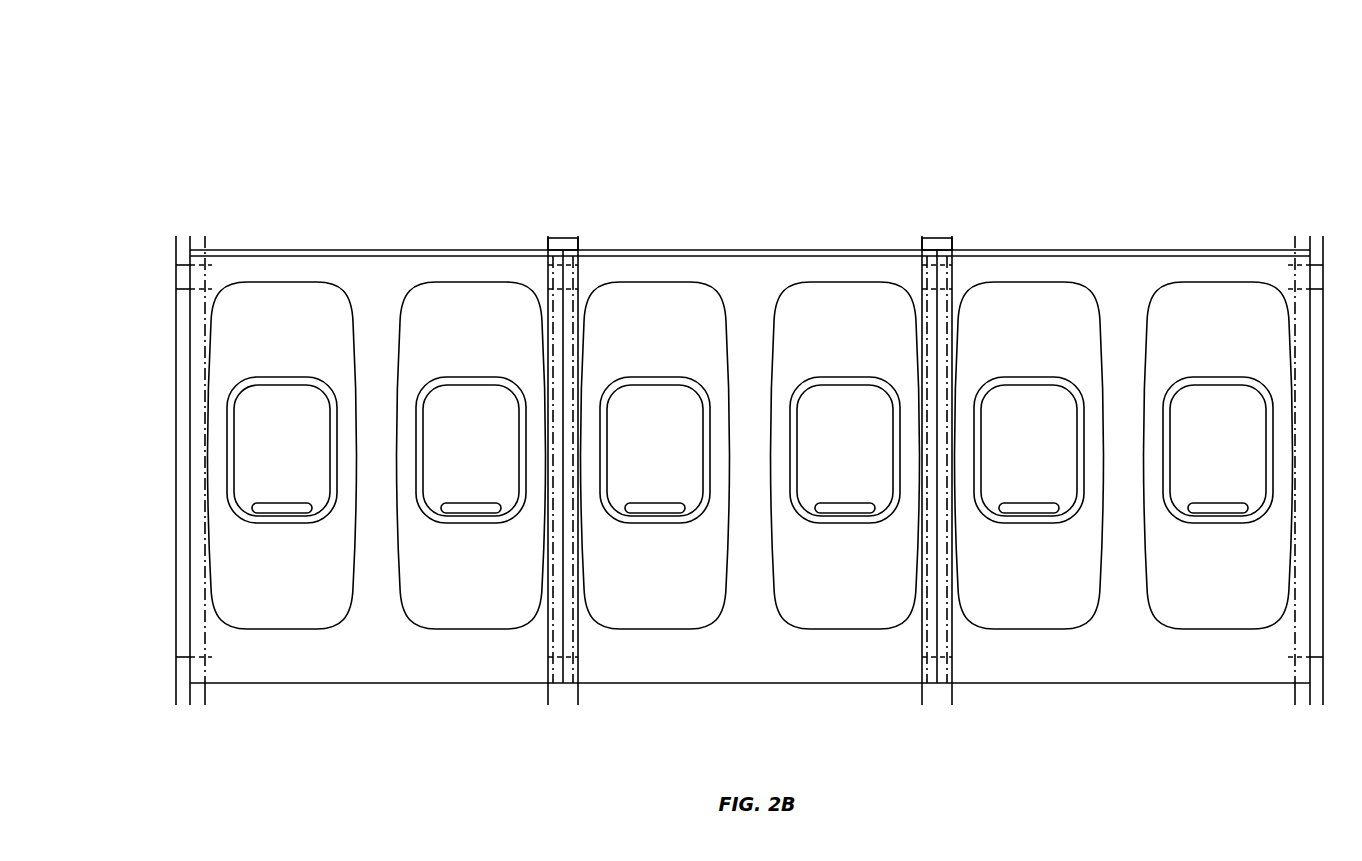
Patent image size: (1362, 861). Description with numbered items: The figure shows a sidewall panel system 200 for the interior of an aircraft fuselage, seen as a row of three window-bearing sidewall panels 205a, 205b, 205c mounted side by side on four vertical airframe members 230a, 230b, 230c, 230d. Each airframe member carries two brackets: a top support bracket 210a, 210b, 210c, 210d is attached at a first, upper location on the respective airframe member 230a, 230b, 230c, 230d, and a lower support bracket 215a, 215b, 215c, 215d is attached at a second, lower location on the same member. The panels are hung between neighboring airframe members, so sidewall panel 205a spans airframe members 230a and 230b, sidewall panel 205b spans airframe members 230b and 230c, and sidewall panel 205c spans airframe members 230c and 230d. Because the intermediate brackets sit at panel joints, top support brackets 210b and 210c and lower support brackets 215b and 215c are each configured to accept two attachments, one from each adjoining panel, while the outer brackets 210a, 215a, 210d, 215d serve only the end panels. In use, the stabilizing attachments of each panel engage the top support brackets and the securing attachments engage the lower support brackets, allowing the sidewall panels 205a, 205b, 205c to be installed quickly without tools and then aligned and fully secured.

The sidewall panel system 200 is at (1064, 142).
The sidewall panel 205a is at (377, 285).
The sidewall panel 205b is at (757, 288).
The sidewall panel 205c is at (1127, 280).
The top support bracket 210a is at (183, 275).
The top support bracket 210b is at (553, 238).
The top support bracket 210c is at (932, 238).
The top support bracket 210d is at (1318, 263).
The lower support bracket 215a is at (183, 669).
The lower support bracket 215b is at (555, 672).
The lower support bracket 215c is at (928, 672).
The lower support bracket 215d is at (1300, 672).
The airframe member 230a is at (190, 697).
The airframe member 230b is at (563, 697).
The airframe member 230c is at (937, 697).
The airframe member 230d is at (1310, 697).